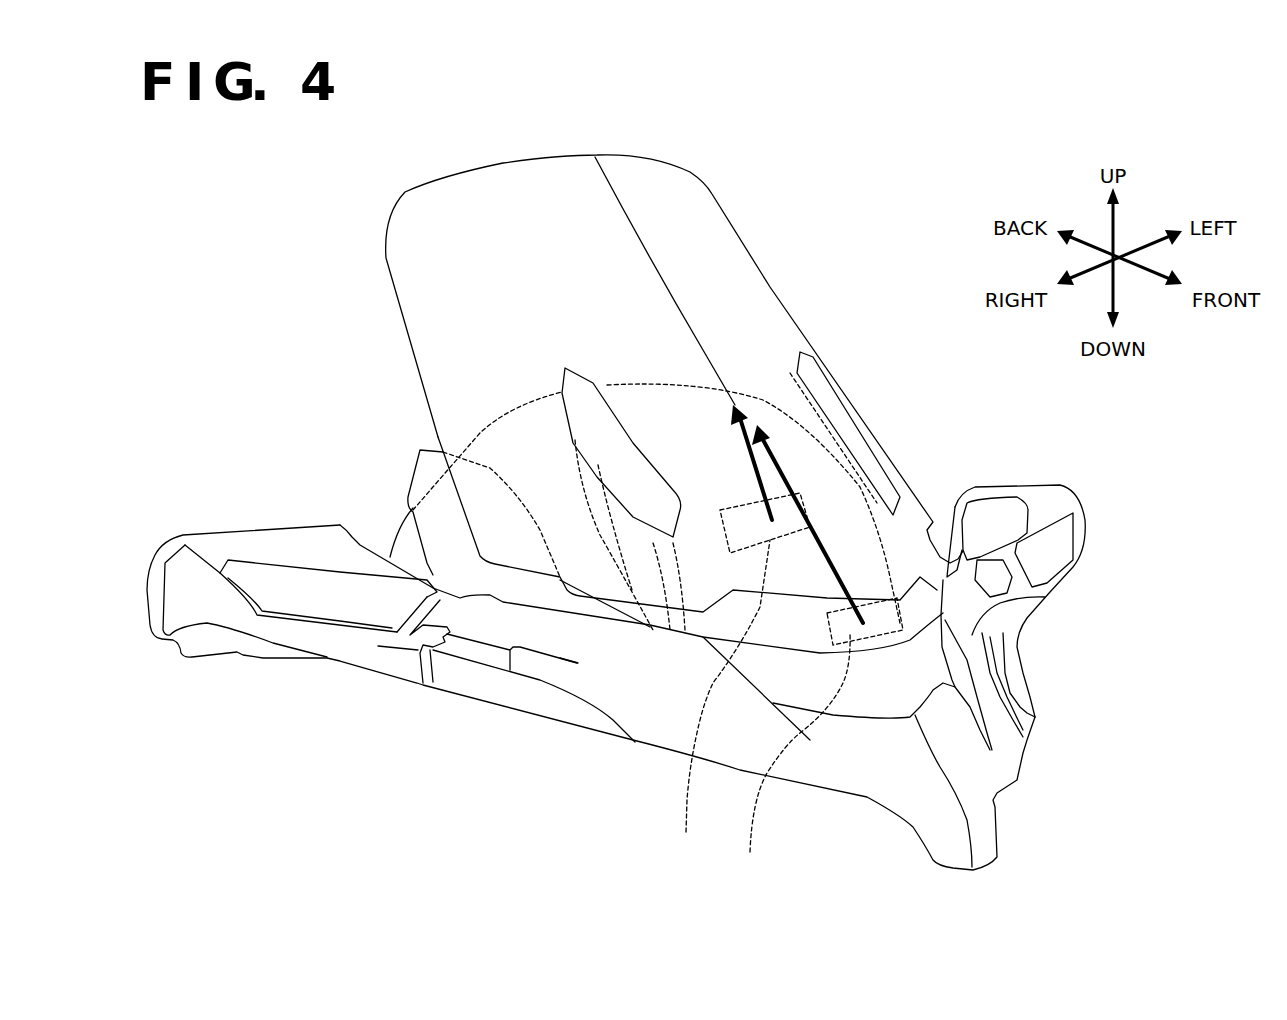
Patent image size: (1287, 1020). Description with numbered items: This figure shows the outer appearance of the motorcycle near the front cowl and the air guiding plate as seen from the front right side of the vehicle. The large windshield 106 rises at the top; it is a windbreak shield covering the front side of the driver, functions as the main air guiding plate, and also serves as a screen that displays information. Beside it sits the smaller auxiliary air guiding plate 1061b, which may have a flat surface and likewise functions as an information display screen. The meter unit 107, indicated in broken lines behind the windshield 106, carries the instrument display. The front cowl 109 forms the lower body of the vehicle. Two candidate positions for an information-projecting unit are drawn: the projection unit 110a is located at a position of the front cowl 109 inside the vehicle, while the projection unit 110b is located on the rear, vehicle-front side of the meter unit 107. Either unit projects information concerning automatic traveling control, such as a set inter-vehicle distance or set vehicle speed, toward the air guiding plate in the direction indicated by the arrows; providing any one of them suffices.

The windshield 106 is at (708, 186).
The meter unit 107 is at (462, 414).
The auxiliary air guiding plate 1061b is at (432, 510).
The front cowl 109 is at (933, 673).
The projection unit 110a is at (815, 745).
The projection unit 110b is at (732, 677).